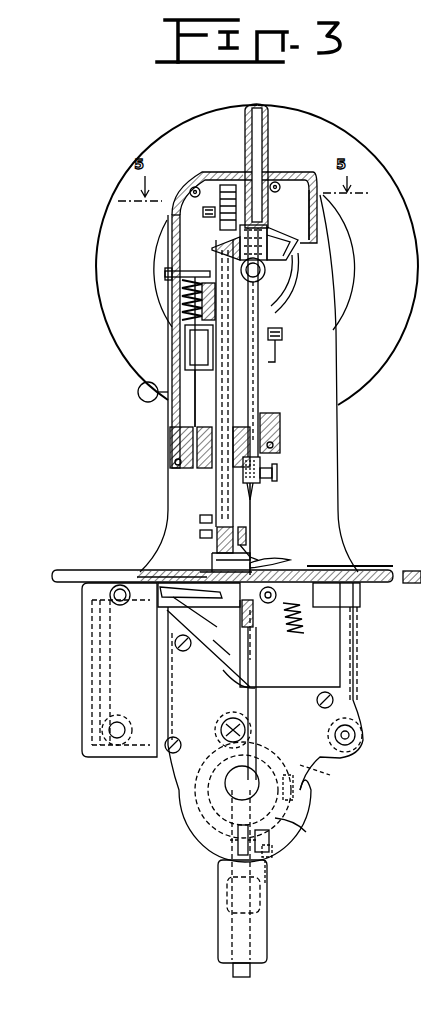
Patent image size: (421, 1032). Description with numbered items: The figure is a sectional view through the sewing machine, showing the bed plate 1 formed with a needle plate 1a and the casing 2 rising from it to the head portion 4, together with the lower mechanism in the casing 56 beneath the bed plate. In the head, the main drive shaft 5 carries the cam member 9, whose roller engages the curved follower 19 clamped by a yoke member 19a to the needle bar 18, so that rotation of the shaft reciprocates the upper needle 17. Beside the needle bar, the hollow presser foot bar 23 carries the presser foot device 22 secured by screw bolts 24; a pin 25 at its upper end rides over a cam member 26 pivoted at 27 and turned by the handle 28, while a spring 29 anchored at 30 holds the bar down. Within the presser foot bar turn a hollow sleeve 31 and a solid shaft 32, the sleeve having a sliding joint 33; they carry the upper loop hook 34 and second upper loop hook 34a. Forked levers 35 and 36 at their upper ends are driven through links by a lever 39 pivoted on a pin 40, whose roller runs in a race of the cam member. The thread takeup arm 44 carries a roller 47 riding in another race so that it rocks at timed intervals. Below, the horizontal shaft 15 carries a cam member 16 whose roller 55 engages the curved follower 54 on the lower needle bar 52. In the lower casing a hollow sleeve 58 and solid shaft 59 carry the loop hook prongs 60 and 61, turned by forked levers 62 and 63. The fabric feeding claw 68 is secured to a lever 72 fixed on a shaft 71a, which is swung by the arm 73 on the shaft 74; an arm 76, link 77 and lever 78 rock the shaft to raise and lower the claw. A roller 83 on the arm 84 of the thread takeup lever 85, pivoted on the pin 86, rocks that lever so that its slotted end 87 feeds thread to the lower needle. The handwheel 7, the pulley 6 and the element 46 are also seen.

The bed plate 1 is at (57, 570).
The needle plate 1a is at (307, 572).
The casing 2 is at (340, 447).
The head portion 4 is at (332, 353).
The main drive shaft 5 is at (300, 270).
The pulley 6 is at (333, 240).
The hand wheel 7 is at (378, 157).
The cam member 9 is at (318, 243).
The horizontal shaft 15 is at (308, 820).
The cam member 16 is at (210, 830).
The upper needle 17 is at (257, 503).
The needle bar 18 is at (257, 400).
The curved follower 19 is at (318, 238).
The yoke member 19a is at (243, 245).
The presser foot device 22 is at (287, 563).
The presser foot bar 23 is at (215, 480).
The screw bolts 24 is at (200, 540).
The pin 25 is at (175, 273).
The cam member 26 is at (171, 290).
The pivot 27 is at (171, 310).
The handle 28 is at (140, 398).
The spring 29 is at (190, 320).
The spring anchor 30 is at (185, 367).
The hollow sleeve 31 is at (215, 494).
The solid shaft 32 is at (227, 500).
The sliding joint 33 is at (256, 382).
The upper loop hook 34 is at (253, 540).
The second upper loop hook 34a is at (252, 550).
The forked lever 35 is at (216, 212).
The forked lever 36 is at (216, 216).
The lever 39 is at (287, 190).
The pin 40 is at (315, 186).
The thread takeup arm 44 is at (283, 335).
The crank arm 46 is at (300, 300).
The roller 47 is at (310, 292).
The needle bar 52 is at (253, 655).
The curved follower 54 is at (310, 773).
The roller 55 is at (242, 765).
The casing 56 is at (306, 832).
The hollow sleeve 58 is at (213, 645).
The solid shaft 59 is at (223, 670).
The prong 60 is at (250, 603).
The prong 61 is at (276, 595).
The forked lever 62 is at (207, 727).
The forked lever 63 is at (207, 751).
The fabric feeding claw 68 is at (202, 570).
The shaft 71a is at (116, 596).
The lever 72 is at (177, 604).
The arm 73 is at (110, 683).
The shaft 74 is at (113, 733).
The arm 76 is at (165, 576).
The link 77 is at (277, 669).
The lever 78 is at (325, 747).
The roller 83 is at (292, 795).
The arm 84 is at (300, 852).
The thread takeup lever 85 is at (273, 887).
The pin 86 is at (283, 868).
The slotted end 87 is at (240, 835).